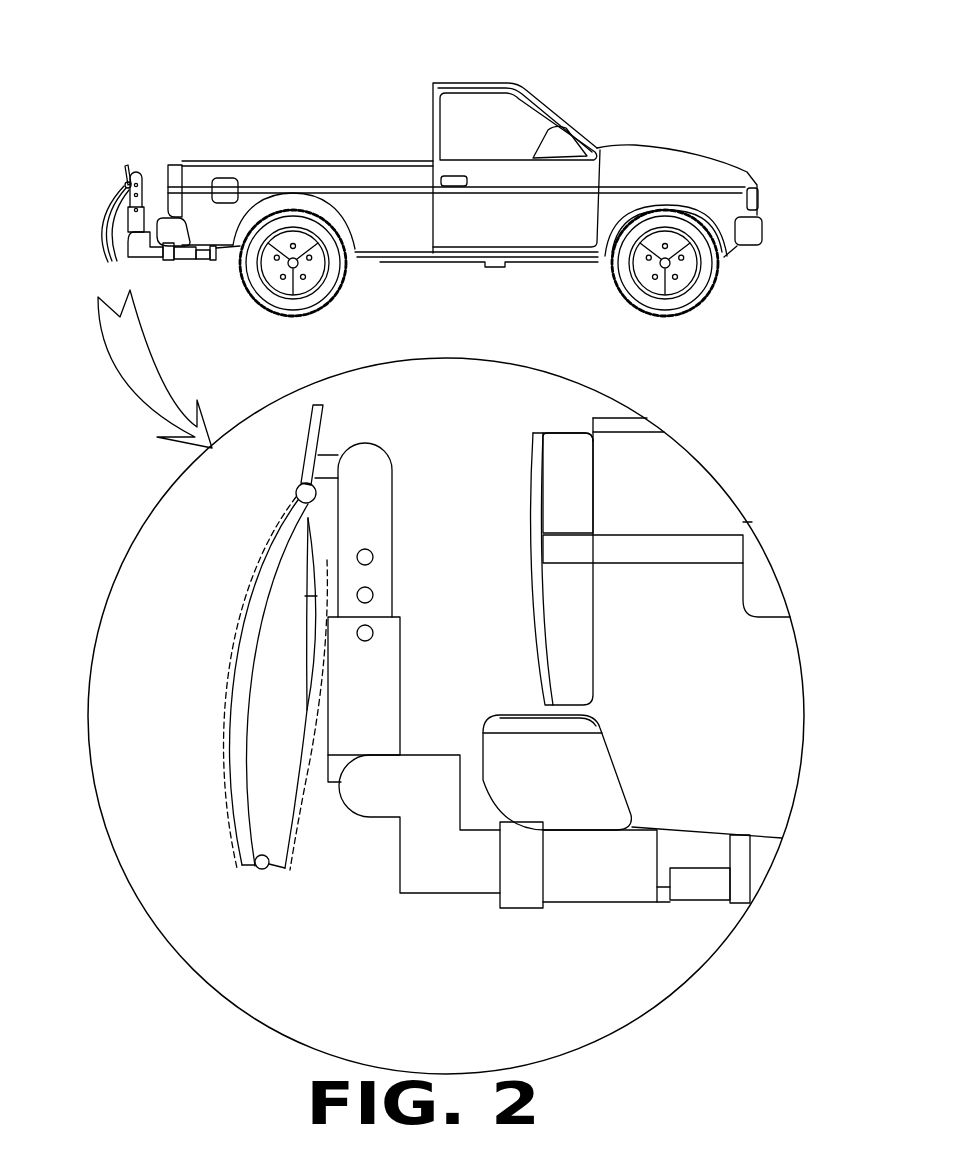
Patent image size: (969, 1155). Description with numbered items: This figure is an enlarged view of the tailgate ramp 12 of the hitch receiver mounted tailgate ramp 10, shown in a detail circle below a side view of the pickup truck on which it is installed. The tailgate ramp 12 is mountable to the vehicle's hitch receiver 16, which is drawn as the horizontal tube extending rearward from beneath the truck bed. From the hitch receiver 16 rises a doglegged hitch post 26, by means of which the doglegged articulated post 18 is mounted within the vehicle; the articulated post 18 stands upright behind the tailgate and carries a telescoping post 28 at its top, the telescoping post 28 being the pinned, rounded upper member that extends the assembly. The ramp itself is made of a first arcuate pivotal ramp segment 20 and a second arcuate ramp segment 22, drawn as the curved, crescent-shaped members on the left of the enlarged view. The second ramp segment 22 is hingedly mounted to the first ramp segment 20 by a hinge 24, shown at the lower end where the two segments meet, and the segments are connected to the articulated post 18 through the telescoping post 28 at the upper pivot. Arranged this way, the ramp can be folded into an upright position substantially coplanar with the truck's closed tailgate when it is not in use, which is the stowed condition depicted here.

The hitch receiver mounted tailgate ramp 10 is at (724, 98).
The tailgate ramp 12 is at (117, 216).
The hitch receiver 16 is at (570, 900).
The articulated post 18 is at (400, 660).
The first ramp segment 20 is at (241, 722).
The second ramp segment 22 is at (312, 652).
The hinge 24 is at (267, 868).
The hitch post 26 is at (398, 832).
The telescopic post 28 is at (392, 520).